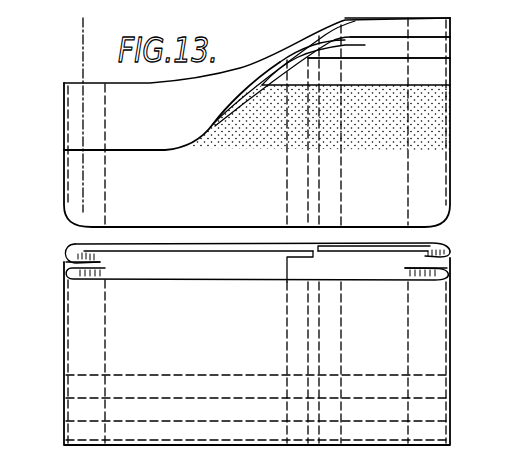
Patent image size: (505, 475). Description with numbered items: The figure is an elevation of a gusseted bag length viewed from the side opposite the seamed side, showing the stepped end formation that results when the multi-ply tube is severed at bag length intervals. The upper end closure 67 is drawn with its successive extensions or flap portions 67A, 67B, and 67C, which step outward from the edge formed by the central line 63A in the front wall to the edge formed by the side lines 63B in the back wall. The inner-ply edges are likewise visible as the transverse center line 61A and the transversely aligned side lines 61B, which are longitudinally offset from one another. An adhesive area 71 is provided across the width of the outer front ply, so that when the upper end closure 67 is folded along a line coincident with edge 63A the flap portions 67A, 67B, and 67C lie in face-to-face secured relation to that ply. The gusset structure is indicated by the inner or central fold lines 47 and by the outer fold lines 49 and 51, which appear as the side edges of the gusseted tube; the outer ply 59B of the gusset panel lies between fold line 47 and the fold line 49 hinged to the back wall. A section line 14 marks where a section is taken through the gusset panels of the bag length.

The section line 14- 14 is at (104, 22).
The inner fold line 47 is at (103, 263).
The outer fold line 49 is at (68, 254).
The outer fold line 51 is at (66, 271).
The outer ply of gusset panel 59B is at (438, 47).
The transverse center line 61A is at (350, 56).
The transverse side line 61B is at (367, 36).
The central line 63A is at (334, 78).
The side line 63B is at (360, 19).
The upper end closure 67 is at (232, 71).
The flap portion 67A is at (390, 73).
The flap portion 67B is at (397, 52).
The flap portion 67C is at (438, 25).
The adhesive area 71 is at (430, 125).